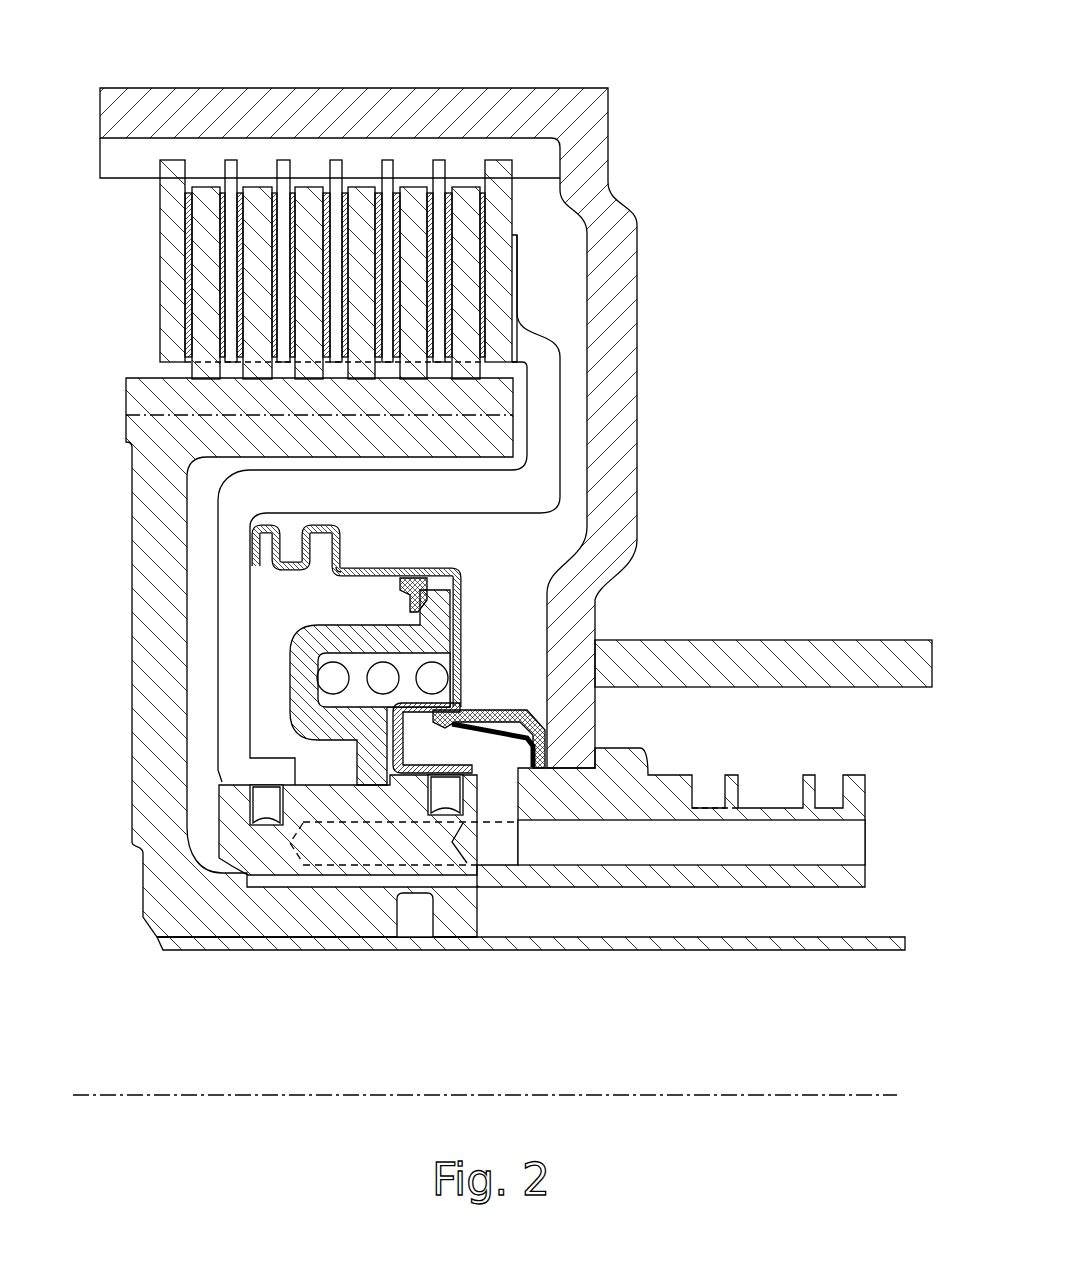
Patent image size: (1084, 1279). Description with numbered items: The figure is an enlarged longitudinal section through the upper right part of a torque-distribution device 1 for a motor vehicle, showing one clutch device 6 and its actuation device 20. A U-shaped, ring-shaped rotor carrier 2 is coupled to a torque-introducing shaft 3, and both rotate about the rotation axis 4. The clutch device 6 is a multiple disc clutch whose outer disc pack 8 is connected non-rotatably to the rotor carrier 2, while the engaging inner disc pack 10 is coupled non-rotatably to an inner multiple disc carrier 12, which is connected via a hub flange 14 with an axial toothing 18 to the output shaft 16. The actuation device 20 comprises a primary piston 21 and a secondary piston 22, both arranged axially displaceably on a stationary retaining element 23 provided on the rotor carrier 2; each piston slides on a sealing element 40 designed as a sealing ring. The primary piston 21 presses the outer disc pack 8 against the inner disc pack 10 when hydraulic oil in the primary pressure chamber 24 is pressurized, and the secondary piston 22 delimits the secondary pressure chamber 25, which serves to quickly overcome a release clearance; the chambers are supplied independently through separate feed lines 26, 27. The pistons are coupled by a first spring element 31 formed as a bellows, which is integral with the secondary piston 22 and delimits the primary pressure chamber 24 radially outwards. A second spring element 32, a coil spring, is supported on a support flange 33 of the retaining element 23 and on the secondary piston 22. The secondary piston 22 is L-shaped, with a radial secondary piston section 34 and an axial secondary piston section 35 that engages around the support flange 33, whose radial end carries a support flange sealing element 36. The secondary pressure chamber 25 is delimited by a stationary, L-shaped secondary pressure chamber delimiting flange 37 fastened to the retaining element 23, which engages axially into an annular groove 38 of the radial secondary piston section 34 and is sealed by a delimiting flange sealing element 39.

The torque-distribution device 1 is at (899, 1017).
The rotor carrier 2 is at (128, 88).
The shaft 3 is at (902, 638).
The rotation axis 4 is at (850, 1096).
The clutch device 6 is at (656, 158).
The outer disc pack 8 is at (232, 160).
The inner disc pack 10 is at (315, 185).
The inner multiple disc carrier 12 is at (490, 403).
The hub flange 14 is at (132, 660).
The output shaft 16 is at (808, 952).
The axial toothing 18 is at (215, 952).
The actuation device 20 is at (652, 586).
The primary piston 21 is at (222, 628).
The secondary piston 22 is at (470, 606).
The retaining element 23 is at (458, 893).
The primary pressure chamber 24 is at (291, 615).
The secondary pressure chamber 25 is at (440, 757).
The feed line 26 is at (392, 733).
The feed line 27 is at (655, 848).
The first spring element 31 is at (300, 522).
The second spring element 32 is at (378, 662).
The support flange 33 is at (290, 683).
The radial secondary piston section 34 is at (462, 650).
The axial secondary piston section 35 is at (372, 562).
The support flange sealing element 36 is at (422, 580).
The secondary pressure chamber delimiting flange 37 is at (485, 843).
The annular groove 38 is at (397, 843).
The delimiting flange sealing element 39 is at (500, 703).
The sealing element 40 is at (267, 800).